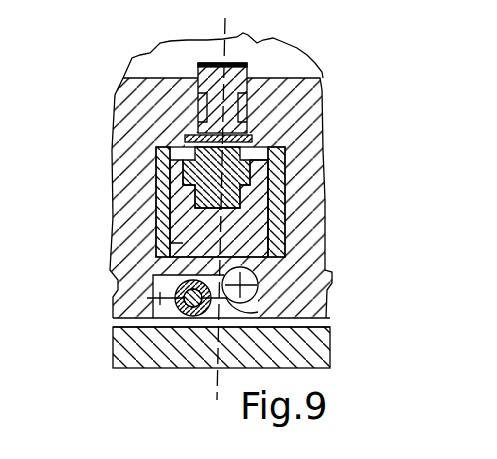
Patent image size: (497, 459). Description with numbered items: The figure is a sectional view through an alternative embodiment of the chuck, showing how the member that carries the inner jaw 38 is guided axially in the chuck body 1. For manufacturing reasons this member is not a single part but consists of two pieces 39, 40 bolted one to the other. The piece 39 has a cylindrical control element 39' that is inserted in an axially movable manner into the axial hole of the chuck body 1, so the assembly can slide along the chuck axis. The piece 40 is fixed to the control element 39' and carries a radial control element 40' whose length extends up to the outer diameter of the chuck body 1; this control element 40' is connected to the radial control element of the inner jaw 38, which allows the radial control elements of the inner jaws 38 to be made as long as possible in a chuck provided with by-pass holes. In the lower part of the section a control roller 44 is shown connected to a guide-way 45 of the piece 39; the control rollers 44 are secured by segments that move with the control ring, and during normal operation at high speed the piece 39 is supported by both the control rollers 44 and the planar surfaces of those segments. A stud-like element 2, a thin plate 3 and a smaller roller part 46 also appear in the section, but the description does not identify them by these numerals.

The chuck body 1 is at (306, 113).
The stud / screw 2 is at (231, 64).
The washer plate 3 is at (192, 124).
The inner jaw 38 is at (156, 168).
The piece 39 is at (165, 209).
The cylindrical control element 39' is at (278, 186).
The piece 40 is at (122, 217).
The radial control element 40' is at (312, 197).
The control roller 44 is at (205, 314).
The guide-way 45 is at (262, 281).
The roller 46 is at (190, 313).